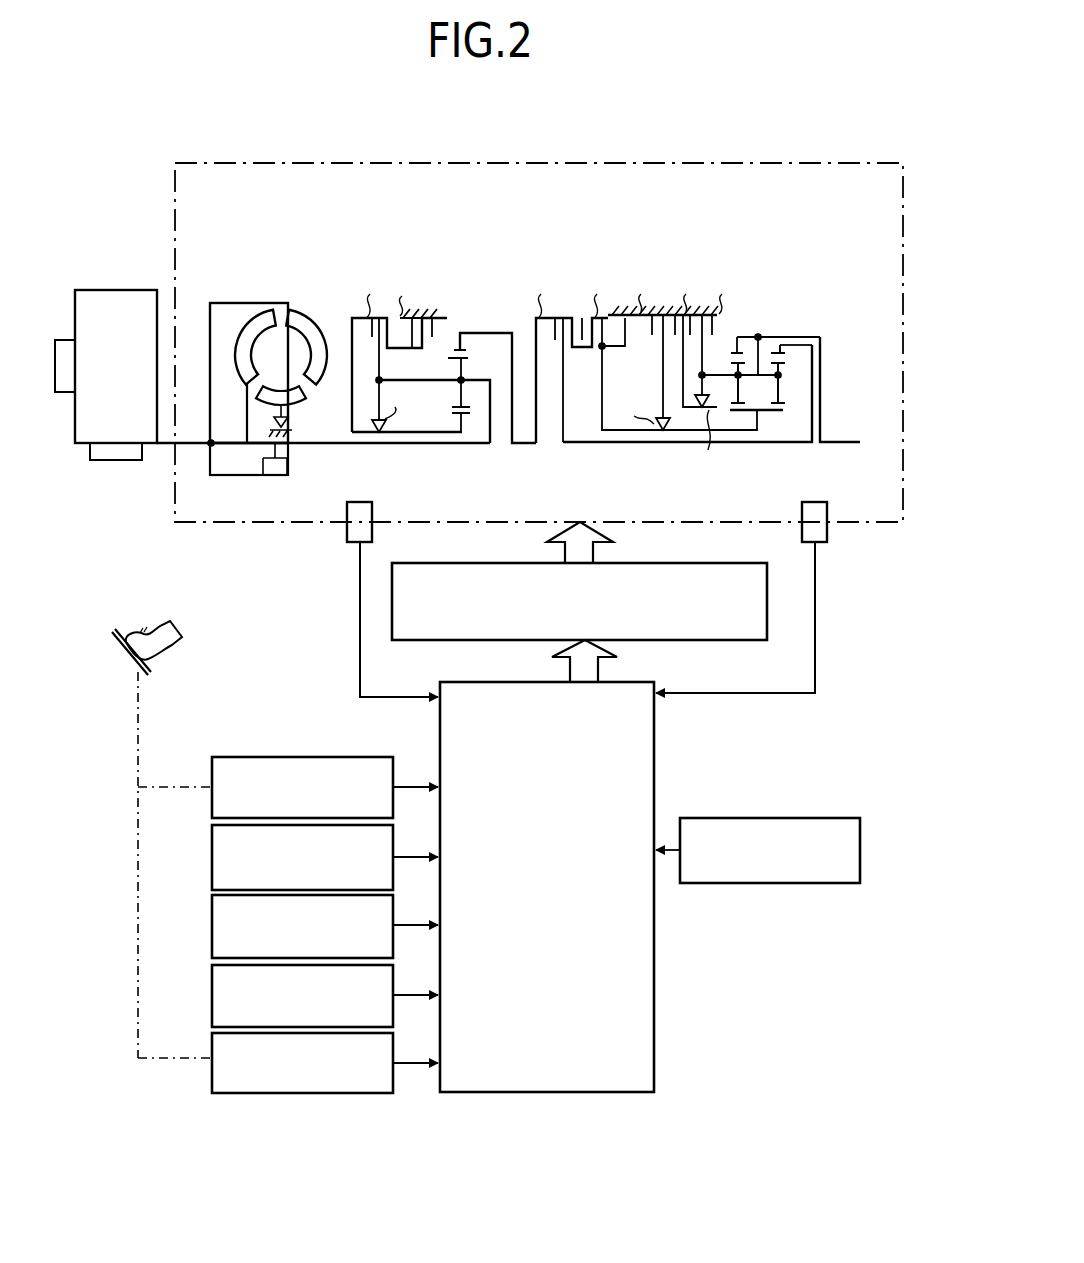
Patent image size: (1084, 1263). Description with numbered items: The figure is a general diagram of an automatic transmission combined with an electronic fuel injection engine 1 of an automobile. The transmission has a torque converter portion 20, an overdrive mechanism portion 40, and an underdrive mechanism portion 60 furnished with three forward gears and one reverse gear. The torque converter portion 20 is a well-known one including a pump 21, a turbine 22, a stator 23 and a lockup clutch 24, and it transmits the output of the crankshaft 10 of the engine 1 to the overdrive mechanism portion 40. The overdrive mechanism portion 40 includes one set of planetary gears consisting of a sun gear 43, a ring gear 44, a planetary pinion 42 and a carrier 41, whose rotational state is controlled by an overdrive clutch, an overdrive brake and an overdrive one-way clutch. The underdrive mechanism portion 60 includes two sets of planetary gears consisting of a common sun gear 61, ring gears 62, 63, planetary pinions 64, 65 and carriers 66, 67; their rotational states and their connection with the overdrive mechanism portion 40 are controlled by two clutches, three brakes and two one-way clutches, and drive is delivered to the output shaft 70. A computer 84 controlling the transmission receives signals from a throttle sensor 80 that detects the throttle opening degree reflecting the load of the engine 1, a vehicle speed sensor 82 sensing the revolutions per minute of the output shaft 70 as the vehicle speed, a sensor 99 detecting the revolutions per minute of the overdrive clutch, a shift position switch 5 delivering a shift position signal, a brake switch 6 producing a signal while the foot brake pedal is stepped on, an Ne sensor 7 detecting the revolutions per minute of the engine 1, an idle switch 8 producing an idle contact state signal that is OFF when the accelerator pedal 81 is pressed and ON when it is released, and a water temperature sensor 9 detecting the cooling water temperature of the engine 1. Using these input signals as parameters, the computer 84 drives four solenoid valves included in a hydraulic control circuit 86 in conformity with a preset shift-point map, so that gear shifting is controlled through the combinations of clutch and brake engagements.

The engine 1 is at (112, 290).
The crankshaft 10 is at (190, 446).
The torque converter portion 20 is at (242, 303).
The pump 21 is at (305, 320).
The turbine 22 is at (243, 382).
The stator 23 is at (293, 404).
The lockup clutch 24 is at (226, 477).
The overdrive mechanism portion 40 is at (447, 304).
The carrier 41 is at (490, 380).
The planetary pinion 42 is at (446, 359).
The sun gear 43 is at (453, 413).
The ring gear 44 is at (453, 349).
The underdrive mechanism portion 60 is at (670, 288).
The common sun gear 61 is at (774, 412).
The ring gear 62 is at (783, 348).
The ring gear 63 is at (717, 330).
The planetary pinion 64 is at (785, 380).
The planetary pinion 65 is at (745, 380).
The carrier 66 is at (775, 343).
The carrier 67 is at (716, 361).
The output shaft 70 is at (840, 445).
The sensor 99 is at (348, 542).
The vehicle speed sensor 82 is at (826, 542).
The hydraulic control circuit 86 is at (768, 617).
The computer 84 is at (656, 1086).
The accelerator pedal 81 is at (114, 629).
The idle switch 8 is at (212, 814).
The brake switch 6 is at (212, 873).
The Ne sensor 7 is at (212, 947).
The water temperature sensor 9 is at (212, 1003).
The throttle sensor 80 is at (212, 1081).
The shift position switch 5 is at (750, 884).